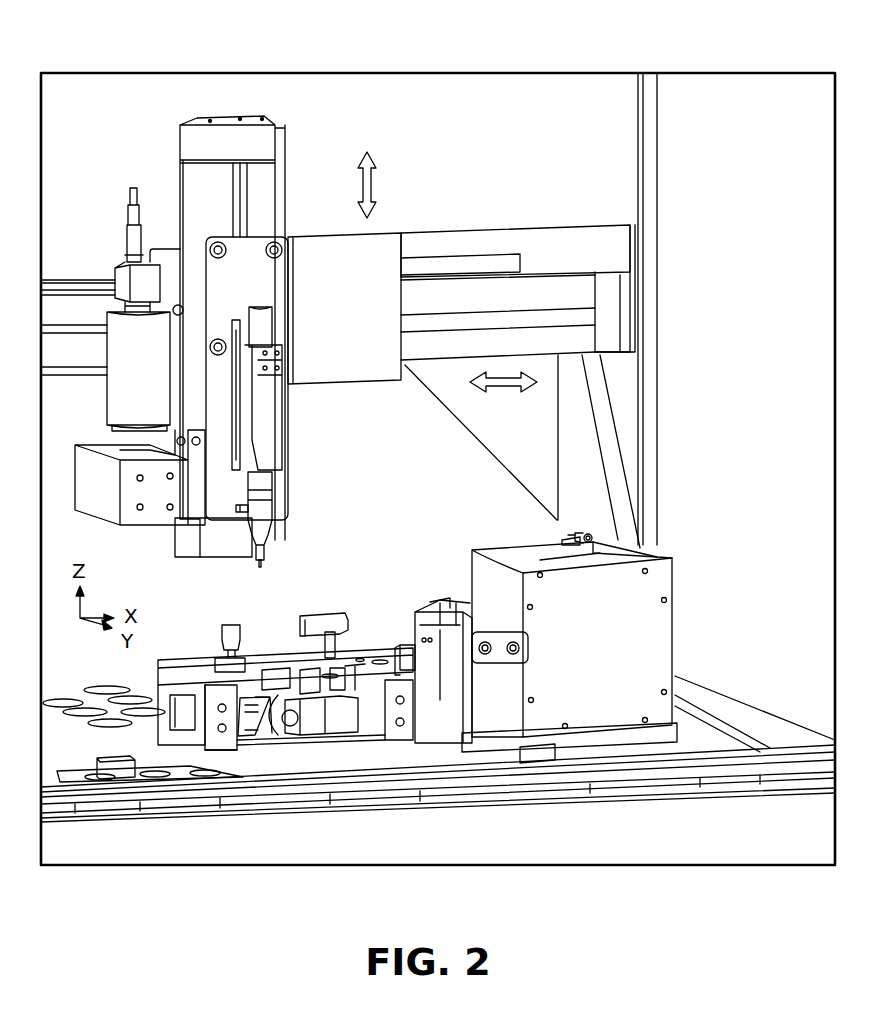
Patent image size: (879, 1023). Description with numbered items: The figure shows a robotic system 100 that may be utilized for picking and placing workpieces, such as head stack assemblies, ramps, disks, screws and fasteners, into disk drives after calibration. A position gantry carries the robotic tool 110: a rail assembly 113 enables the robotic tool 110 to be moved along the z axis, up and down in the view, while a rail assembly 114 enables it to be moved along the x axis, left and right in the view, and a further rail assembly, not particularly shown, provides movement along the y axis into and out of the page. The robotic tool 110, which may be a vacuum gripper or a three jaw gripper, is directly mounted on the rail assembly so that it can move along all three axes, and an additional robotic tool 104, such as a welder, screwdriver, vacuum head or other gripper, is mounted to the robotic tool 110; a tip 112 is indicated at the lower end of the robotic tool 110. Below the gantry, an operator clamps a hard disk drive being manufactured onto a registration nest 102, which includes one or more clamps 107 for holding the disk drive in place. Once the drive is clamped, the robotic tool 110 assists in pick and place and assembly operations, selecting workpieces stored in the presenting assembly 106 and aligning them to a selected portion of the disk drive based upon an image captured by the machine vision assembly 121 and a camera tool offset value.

The robotic system 100 is at (110, 46).
The registration nest 102 is at (295, 588).
The additional robotic tool 104 is at (272, 423).
The presenting assembly 106 is at (425, 614).
The clamps 107 is at (232, 628).
The robotic tool 110 is at (262, 516).
The nozzle tip 112 is at (262, 565).
The rail assembly 113 is at (245, 191).
The rail assembly 114 is at (458, 318).
The machine vision assembly 121 is at (125, 285).